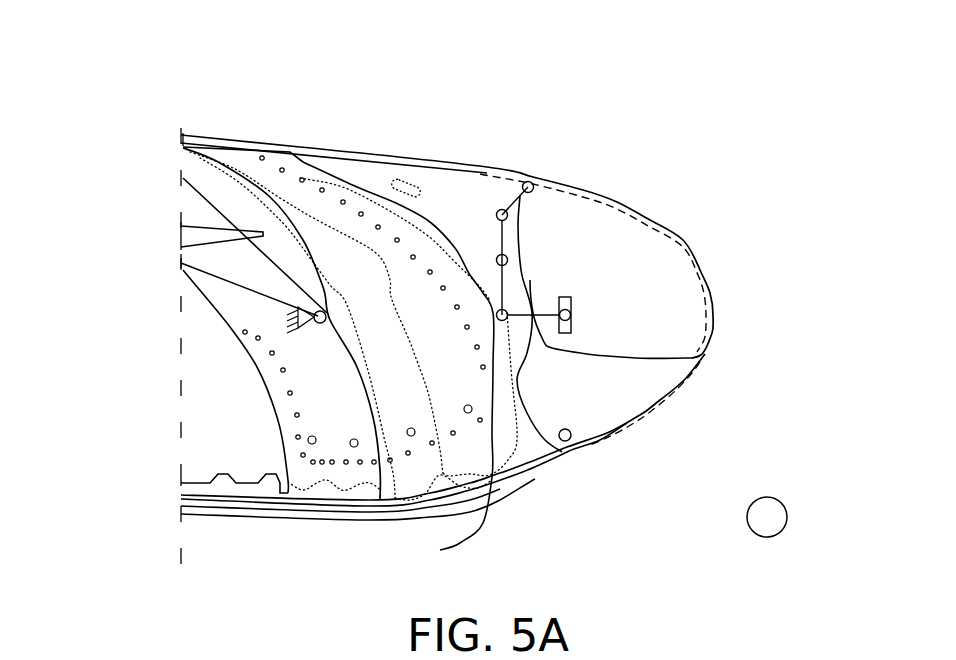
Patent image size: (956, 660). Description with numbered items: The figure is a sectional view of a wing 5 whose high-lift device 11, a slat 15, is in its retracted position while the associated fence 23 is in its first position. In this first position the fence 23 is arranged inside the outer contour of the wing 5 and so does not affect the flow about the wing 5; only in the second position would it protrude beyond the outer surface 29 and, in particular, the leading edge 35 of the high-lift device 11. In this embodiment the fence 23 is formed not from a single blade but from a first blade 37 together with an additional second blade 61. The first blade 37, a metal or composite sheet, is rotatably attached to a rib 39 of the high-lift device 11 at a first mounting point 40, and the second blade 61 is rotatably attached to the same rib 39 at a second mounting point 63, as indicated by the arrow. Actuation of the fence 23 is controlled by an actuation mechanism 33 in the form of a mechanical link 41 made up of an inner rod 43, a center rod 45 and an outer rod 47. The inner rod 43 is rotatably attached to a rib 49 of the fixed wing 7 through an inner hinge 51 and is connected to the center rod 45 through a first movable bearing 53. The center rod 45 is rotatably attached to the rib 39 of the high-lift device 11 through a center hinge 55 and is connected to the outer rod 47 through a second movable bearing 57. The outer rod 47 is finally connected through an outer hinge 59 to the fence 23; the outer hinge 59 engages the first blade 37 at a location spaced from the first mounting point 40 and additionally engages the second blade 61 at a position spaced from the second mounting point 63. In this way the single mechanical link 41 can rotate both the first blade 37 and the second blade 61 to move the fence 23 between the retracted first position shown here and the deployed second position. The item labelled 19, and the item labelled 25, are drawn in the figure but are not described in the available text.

The wing 5 is at (103, 426).
The fixed wing 7 is at (323, 480).
The high-lift device 11 is at (397, 522).
The slat 15 is at (522, 473).
The hinge point 19 is at (767, 515).
The fence 23 is at (745, 319).
The nacelle outer skin 25 is at (240, 133).
The outer surface 29 is at (487, 167).
The actuation mechanism 33 is at (385, 165).
The leading edge 35 is at (715, 300).
The first blade 37 is at (628, 393).
The rib 39 is at (443, 203).
The first mounting point 40 is at (567, 440).
The mechanical link 41 is at (370, 250).
The inner rod 43 is at (352, 300).
The center rod 45 is at (504, 310).
The outer rod 47 is at (650, 233).
The rib 49 is at (357, 480).
The inner hinge 51 is at (181, 263).
The first movable bearing 53 is at (502, 210).
The center hinge 55 is at (543, 307).
The second movable bearing 57 is at (490, 490).
The outer hinge 59 is at (565, 313).
The second blade 61 is at (643, 253).
The second mounting point 63 is at (530, 182).